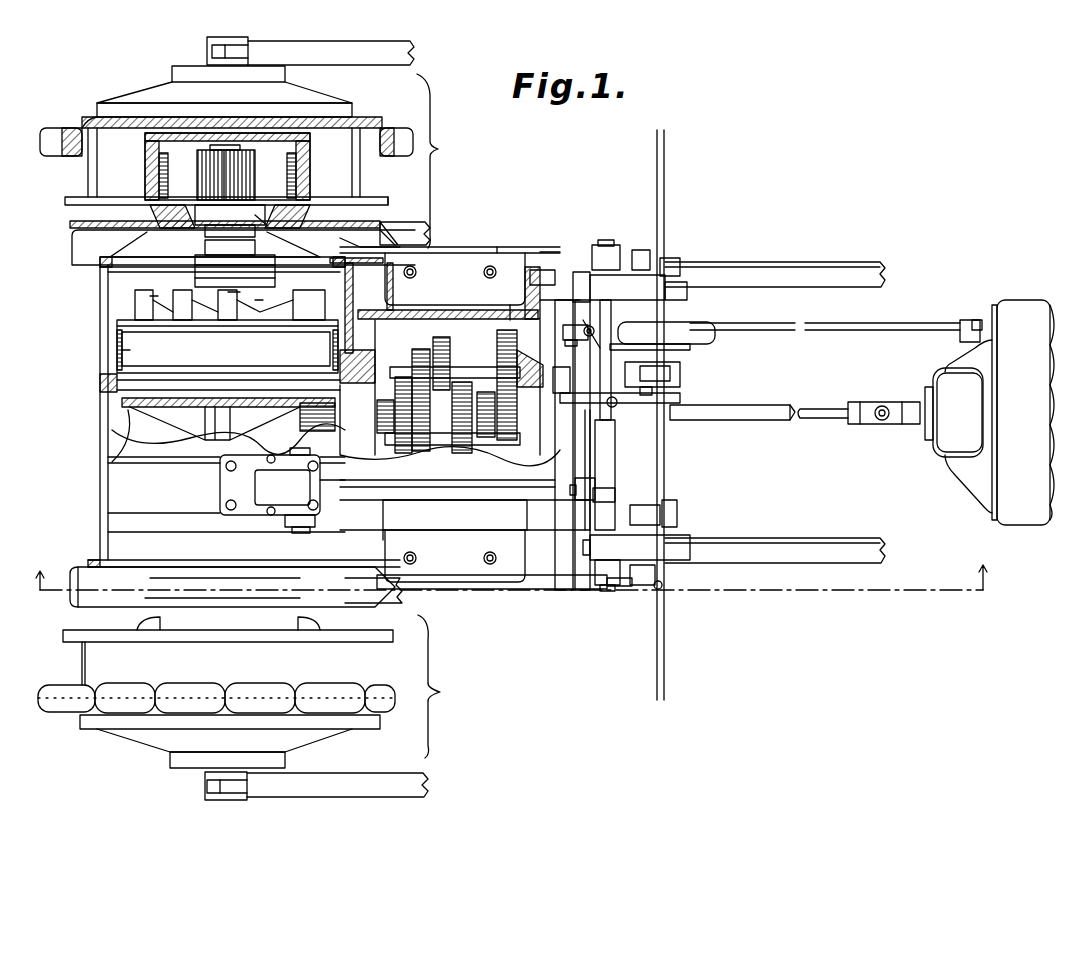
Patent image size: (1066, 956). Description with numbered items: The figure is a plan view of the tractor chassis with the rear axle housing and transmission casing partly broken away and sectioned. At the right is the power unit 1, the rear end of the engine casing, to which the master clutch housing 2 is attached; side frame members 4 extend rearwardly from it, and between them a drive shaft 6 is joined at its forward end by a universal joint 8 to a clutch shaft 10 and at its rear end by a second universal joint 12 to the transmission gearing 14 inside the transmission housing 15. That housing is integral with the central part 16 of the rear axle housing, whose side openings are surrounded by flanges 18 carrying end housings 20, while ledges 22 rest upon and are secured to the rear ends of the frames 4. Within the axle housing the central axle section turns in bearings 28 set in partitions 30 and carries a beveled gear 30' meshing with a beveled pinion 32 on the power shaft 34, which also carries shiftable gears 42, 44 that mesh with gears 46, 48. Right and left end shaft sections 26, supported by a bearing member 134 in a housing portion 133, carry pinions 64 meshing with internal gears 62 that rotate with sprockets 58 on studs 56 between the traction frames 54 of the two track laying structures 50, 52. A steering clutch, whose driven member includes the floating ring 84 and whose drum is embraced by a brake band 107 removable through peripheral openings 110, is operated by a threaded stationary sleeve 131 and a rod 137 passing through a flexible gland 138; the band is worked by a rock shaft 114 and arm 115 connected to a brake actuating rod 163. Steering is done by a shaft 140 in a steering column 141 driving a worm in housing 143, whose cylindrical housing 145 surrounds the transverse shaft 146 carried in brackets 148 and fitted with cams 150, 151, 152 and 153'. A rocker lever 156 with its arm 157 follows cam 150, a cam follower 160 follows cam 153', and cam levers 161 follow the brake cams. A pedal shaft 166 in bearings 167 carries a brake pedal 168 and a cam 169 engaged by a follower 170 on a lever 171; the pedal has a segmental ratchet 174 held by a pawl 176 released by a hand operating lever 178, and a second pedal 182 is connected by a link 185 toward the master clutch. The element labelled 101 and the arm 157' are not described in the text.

The power unit 1 is at (1047, 300).
The master clutch housing 2 is at (978, 480).
The side frame members 4 is at (858, 270).
The drive shaft 6 is at (770, 421).
The universal joint 8 is at (882, 405).
The clutch shaft 10 is at (926, 400).
The second universal joint 12 is at (584, 432).
The transmission gearing 14 is at (388, 358).
The transmission housing 15 is at (512, 507).
The central part of rear axle housing 16 is at (100, 297).
The flanges 18 is at (96, 270).
The end housings 20 is at (100, 215).
The ledges 22 is at (455, 268).
The end shaft sections 26 is at (206, 152).
The bearings 28 is at (201, 394).
The partitions 30 is at (220, 367).
The beveled gear 30' is at (203, 430).
The driving beveled pinion 32 is at (302, 418).
The power shaft 34 is at (574, 400).
The shiftable gear 42 is at (405, 453).
The shiftable gear 44 is at (466, 453).
The gear 46 is at (422, 347).
The gear 48 is at (448, 335).
The track laying structure 50 is at (271, 667).
The track laying structure 52 is at (276, 157).
The traction frames 54 is at (416, 52).
The studs 56 is at (220, 36).
The sprocket 58 is at (52, 132).
The internal gear 62 is at (150, 175).
The pinion 64 is at (222, 148).
The floating ring 84 is at (227, 346).
The post 101 is at (143, 298).
The brake band 107 is at (144, 352).
The peripheral openings 110 is at (78, 238).
The rock shaft 114 is at (280, 516).
The arm 115 is at (295, 528).
The stationary sleeve 131 is at (197, 262).
The portion of rear axle housing 133 is at (400, 221).
The bearing member 134 is at (260, 220).
The rod 137 is at (497, 252).
The flexible gland 138 is at (418, 225).
The shaft 140 is at (590, 338).
The steering column 141 is at (606, 328).
The housing 143 is at (705, 340).
The cylindrical housing 145 is at (690, 350).
The shaft 146 is at (665, 470).
The brackets 148 is at (650, 285).
The cam 150 is at (672, 258).
The cam 151 is at (680, 376).
The cam 152 is at (677, 510).
The cam 153' is at (675, 576).
The rocker lever 156 is at (585, 240).
The arm 157 is at (620, 241).
The bolt 157' is at (625, 594).
The cam follower 160 is at (662, 588).
The cam levers 161 is at (668, 396).
The brake actuating rod 163 is at (527, 296).
The pedal shaft 166 is at (592, 328).
The bearings 167 is at (575, 283).
The brake pedal 168 is at (497, 370).
The cam 169 is at (615, 490).
The follower 170 is at (580, 484).
The lever 171 is at (575, 494).
The segmental ratchet 174 is at (615, 455).
The pawl 176 is at (662, 420).
The hand operating lever 178 is at (616, 410).
The second pedal 182 is at (575, 250).
The link 185 is at (522, 318).